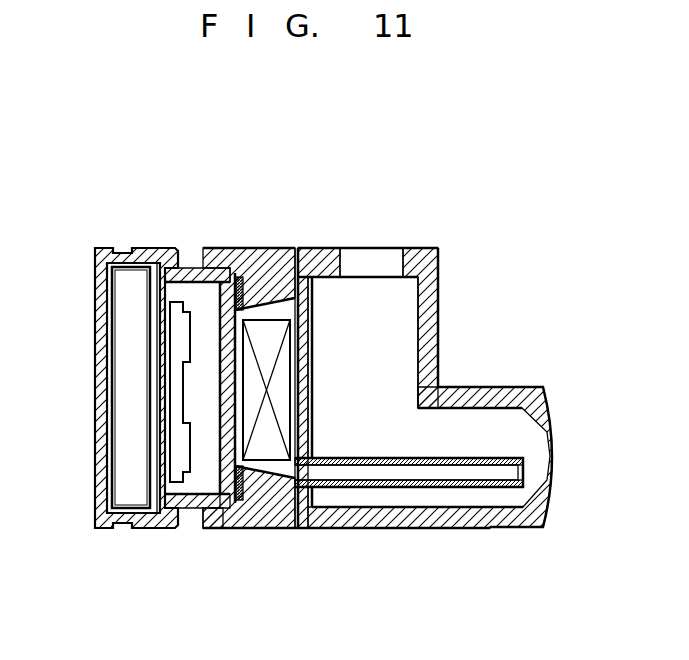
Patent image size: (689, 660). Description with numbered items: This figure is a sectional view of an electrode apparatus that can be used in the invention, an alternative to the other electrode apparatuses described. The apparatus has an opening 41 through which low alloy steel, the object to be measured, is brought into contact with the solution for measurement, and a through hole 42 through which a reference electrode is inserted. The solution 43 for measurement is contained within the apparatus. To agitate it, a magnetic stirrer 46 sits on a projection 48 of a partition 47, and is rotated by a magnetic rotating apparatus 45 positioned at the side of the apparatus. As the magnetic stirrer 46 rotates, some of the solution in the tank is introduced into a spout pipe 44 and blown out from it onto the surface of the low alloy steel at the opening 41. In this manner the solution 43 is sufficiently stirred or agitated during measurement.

The opening 41 is at (552, 452).
The through hole 42 is at (386, 247).
The solution 43 is at (410, 358).
The spout pipe 44 is at (464, 457).
The magnetic rotating apparatus 45 is at (120, 322).
The magnetic stirrer 46 is at (265, 330).
The partition 47 is at (219, 510).
The projection 48 is at (236, 392).